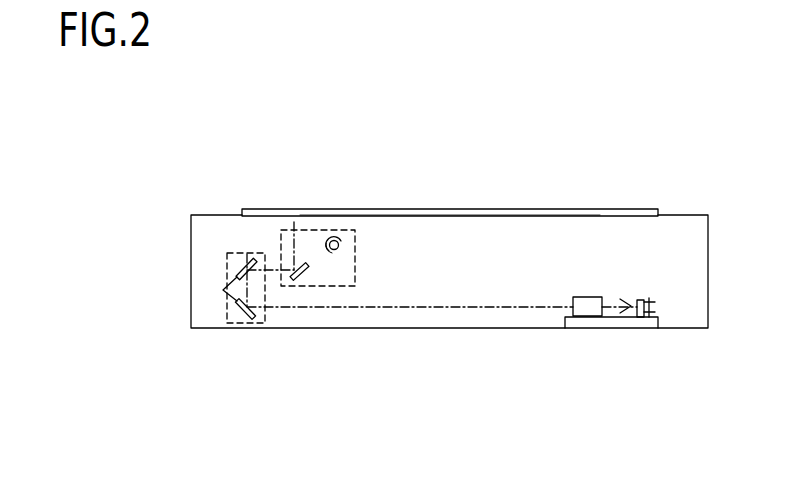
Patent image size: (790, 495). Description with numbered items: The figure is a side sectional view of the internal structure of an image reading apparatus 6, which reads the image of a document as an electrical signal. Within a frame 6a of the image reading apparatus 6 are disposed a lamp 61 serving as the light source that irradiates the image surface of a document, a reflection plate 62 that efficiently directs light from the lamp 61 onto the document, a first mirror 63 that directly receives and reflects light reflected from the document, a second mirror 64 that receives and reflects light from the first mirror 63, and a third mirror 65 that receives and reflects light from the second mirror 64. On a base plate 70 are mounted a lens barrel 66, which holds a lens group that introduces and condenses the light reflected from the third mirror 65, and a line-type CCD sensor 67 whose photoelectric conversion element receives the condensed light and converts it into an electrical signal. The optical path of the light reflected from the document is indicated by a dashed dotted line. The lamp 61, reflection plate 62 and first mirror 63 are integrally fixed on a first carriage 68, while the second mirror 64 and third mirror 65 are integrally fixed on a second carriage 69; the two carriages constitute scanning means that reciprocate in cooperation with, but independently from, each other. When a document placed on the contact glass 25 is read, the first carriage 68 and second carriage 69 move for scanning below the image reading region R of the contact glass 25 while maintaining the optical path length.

The image reading apparatus 6 is at (216, 148).
The frame 6a is at (191, 258).
The contact glass 25 is at (472, 213).
The image reading region R is at (512, 216).
The lamp 61 is at (343, 242).
The reflection plate 62 is at (343, 250).
The first mirror 63 is at (308, 274).
The second mirror 64 is at (236, 265).
The third mirror 65 is at (237, 312).
The lens barrel 66 is at (585, 297).
The line-type CCD sensor 67 is at (645, 300).
The first carriage 68 is at (355, 283).
The second carriage 69 is at (240, 323).
The base plate 70 is at (658, 324).